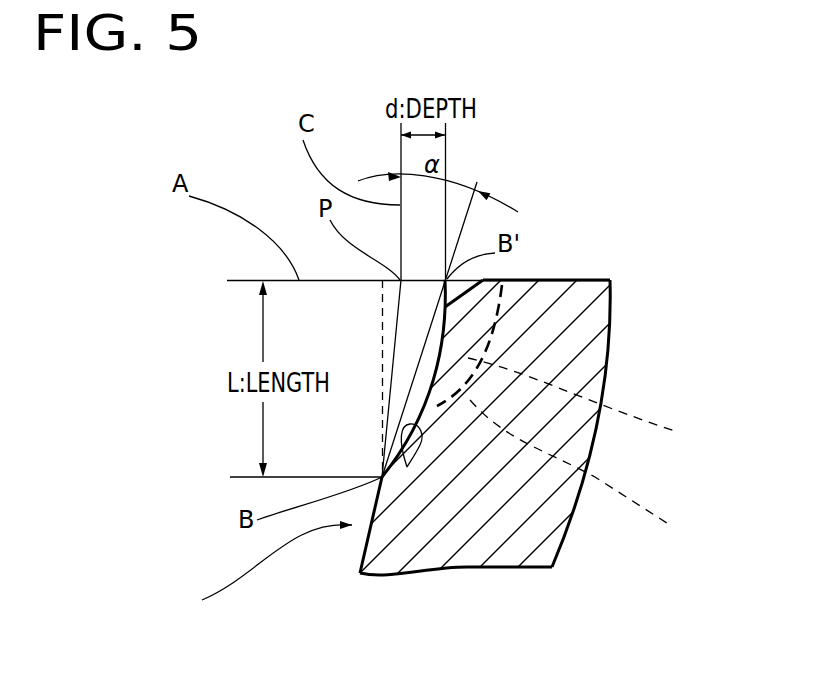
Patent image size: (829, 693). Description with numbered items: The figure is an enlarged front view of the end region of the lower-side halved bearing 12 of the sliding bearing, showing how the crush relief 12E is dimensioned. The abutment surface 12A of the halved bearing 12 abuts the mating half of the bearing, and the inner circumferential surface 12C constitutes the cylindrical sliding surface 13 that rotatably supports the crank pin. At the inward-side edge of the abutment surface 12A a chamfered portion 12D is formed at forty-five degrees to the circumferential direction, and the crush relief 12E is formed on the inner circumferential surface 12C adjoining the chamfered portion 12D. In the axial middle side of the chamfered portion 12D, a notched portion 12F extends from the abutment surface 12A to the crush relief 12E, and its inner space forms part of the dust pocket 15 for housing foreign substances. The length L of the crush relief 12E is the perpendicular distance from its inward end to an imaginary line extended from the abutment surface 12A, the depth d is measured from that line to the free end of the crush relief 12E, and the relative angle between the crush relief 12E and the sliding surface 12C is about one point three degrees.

The lower-side halved bearing 12 is at (543, 535).
The abutment surface 12A is at (555, 280).
The inner circumferential surface 12C is at (362, 548).
The chamfered portion 12D is at (447, 279).
The crush relief 12E is at (407, 467).
The notched portion 12F is at (591, 473).
The sliding surface 13 is at (262, 573).
The dust pocket 15 is at (587, 401).